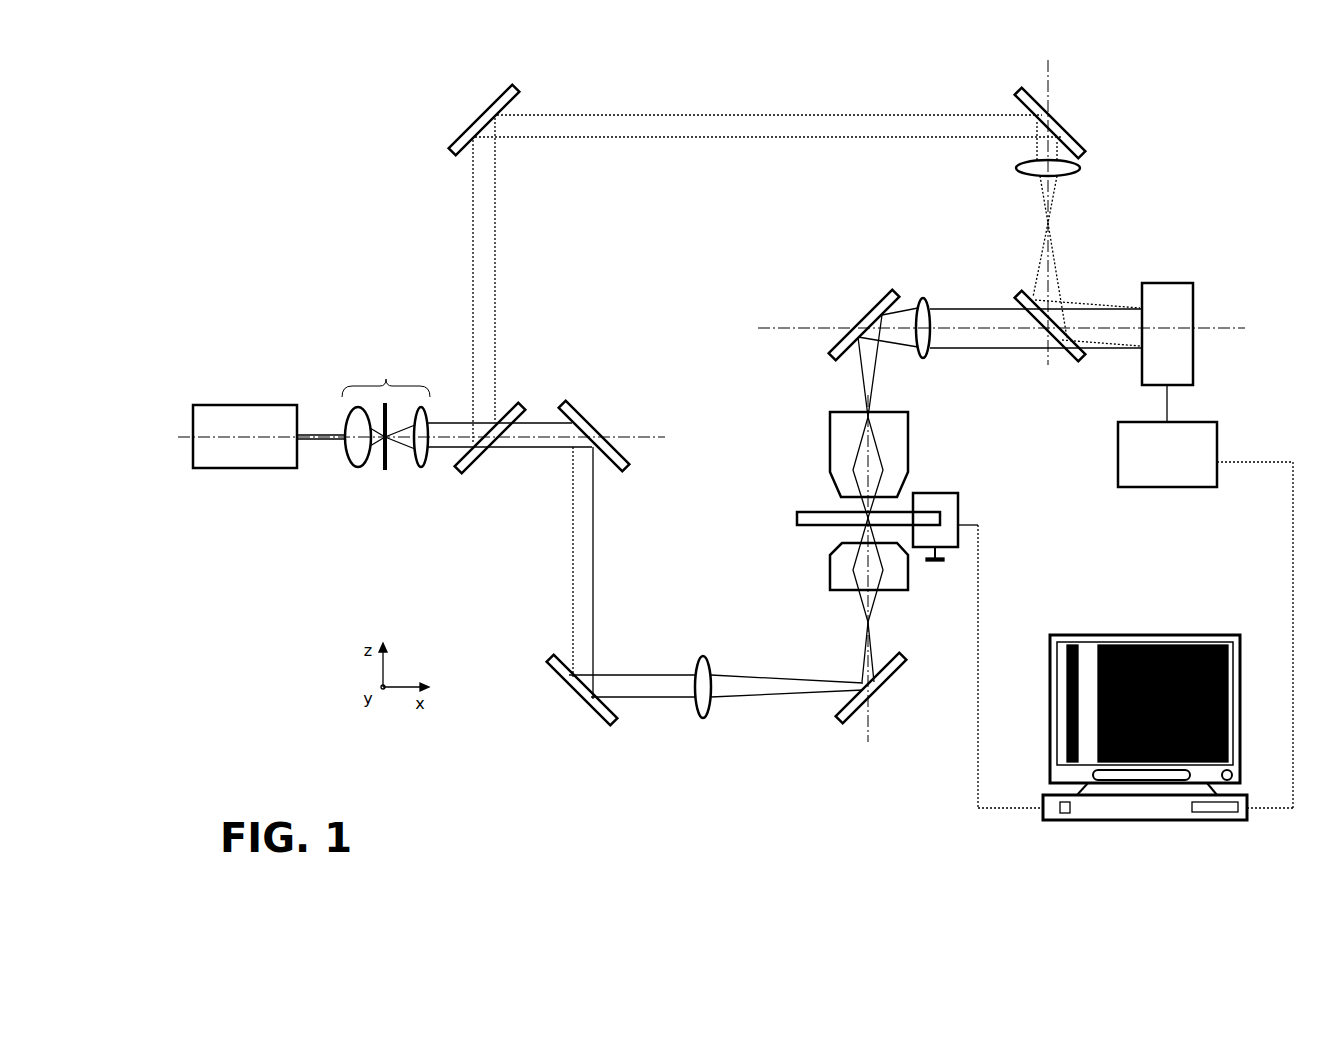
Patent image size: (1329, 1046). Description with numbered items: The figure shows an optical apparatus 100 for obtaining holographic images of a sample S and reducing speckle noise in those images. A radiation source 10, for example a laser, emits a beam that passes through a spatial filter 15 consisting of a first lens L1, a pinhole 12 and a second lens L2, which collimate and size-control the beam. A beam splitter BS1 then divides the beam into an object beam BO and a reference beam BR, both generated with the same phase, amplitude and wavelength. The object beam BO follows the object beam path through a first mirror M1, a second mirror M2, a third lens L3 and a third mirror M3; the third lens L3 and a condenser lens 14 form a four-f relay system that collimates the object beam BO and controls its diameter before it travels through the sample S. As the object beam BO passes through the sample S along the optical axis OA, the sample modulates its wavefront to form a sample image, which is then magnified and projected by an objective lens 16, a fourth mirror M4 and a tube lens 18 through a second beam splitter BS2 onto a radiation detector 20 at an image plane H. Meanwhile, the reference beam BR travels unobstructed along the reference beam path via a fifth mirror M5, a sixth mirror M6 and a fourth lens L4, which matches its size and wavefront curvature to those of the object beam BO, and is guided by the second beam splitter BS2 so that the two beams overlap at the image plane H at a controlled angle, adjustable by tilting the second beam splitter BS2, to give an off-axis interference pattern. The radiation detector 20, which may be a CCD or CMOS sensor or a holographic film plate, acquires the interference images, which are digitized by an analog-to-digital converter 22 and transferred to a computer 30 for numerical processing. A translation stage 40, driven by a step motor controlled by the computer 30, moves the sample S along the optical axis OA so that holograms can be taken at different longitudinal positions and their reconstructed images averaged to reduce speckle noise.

The optical apparatus 100 is at (308, 268).
The radiation source 10 is at (245, 470).
The spatial filter 15 is at (386, 375).
The first lens L1 is at (358, 470).
The pinhole 12 is at (385, 470).
The second lens L2 is at (420, 470).
The beam splitter BS1 is at (486, 462).
The first mirror M1 is at (613, 430).
The reference beam BR is at (497, 259).
The fifth mirror M5 is at (478, 110).
The sixth mirror M6 is at (1060, 112).
The fourth lens L4 is at (1083, 168).
The second beam splitter BS2 is at (1013, 292).
The image plane H is at (1131, 290).
The radiation detector 20 is at (1195, 322).
The fourth mirror M4 is at (868, 297).
The tube lens 18 is at (923, 297).
The objective lens 16 is at (828, 438).
The sample S is at (796, 518).
The condenser lens 14 is at (828, 572).
The optical axis OA is at (864, 600).
The translation stage 40 is at (950, 492).
The analog-to-digital converter 22 is at (1140, 490).
The computer 30 is at (1222, 632).
The object beam BO is at (596, 572).
The second mirror M2 is at (592, 720).
The third lens L3 is at (704, 722).
The third mirror M3 is at (851, 724).